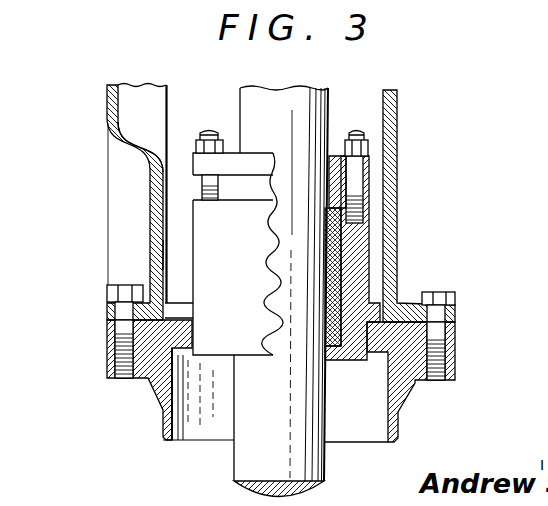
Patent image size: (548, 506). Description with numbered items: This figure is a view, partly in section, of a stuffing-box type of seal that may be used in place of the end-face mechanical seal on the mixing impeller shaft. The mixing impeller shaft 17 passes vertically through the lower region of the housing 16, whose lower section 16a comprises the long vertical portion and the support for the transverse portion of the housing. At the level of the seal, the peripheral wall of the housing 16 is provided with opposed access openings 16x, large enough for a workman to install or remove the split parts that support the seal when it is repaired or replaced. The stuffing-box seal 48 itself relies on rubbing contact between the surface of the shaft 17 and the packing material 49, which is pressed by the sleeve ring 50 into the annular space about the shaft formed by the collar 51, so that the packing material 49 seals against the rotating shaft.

The housing 16 is at (105, 112).
The lower section of housing 16a is at (116, 136).
The access openings 16x is at (168, 258).
The mixing impeller shaft 17 is at (276, 97).
The stuffing-box seal 48 is at (370, 222).
The packing material 49 is at (326, 238).
The sleeve ring 50 is at (333, 156).
The collar 51 is at (355, 263).